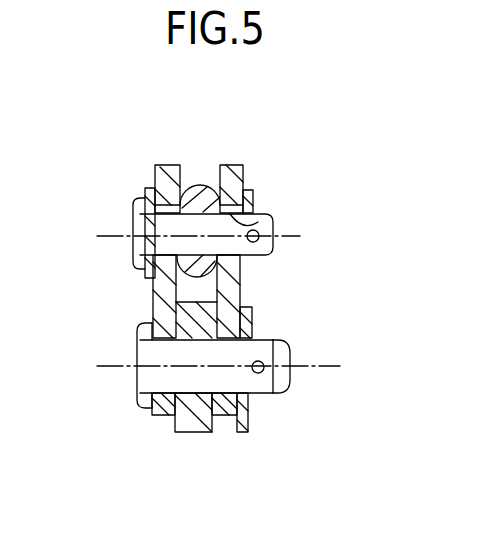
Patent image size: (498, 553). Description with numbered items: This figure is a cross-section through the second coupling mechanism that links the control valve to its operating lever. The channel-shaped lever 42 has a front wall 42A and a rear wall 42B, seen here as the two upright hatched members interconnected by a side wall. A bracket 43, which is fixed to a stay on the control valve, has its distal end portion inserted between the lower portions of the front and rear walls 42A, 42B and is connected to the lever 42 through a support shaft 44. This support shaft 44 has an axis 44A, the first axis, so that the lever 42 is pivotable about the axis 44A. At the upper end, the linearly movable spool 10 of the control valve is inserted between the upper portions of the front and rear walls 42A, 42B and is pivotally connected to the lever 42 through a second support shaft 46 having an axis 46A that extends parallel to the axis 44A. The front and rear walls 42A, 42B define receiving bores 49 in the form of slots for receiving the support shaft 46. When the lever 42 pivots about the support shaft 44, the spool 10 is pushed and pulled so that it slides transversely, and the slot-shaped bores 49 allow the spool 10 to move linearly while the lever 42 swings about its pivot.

The spool 10 is at (200, 196).
The lever 42 is at (225, 231).
The front wall 42A is at (157, 314).
The rear wall 42B is at (228, 297).
The bracket 43 is at (202, 422).
The support shaft 44 is at (269, 415).
The axis 44A is at (318, 370).
The support shaft 46 is at (213, 247).
The axis 46A is at (122, 238).
The receiving bores 49 is at (137, 222).